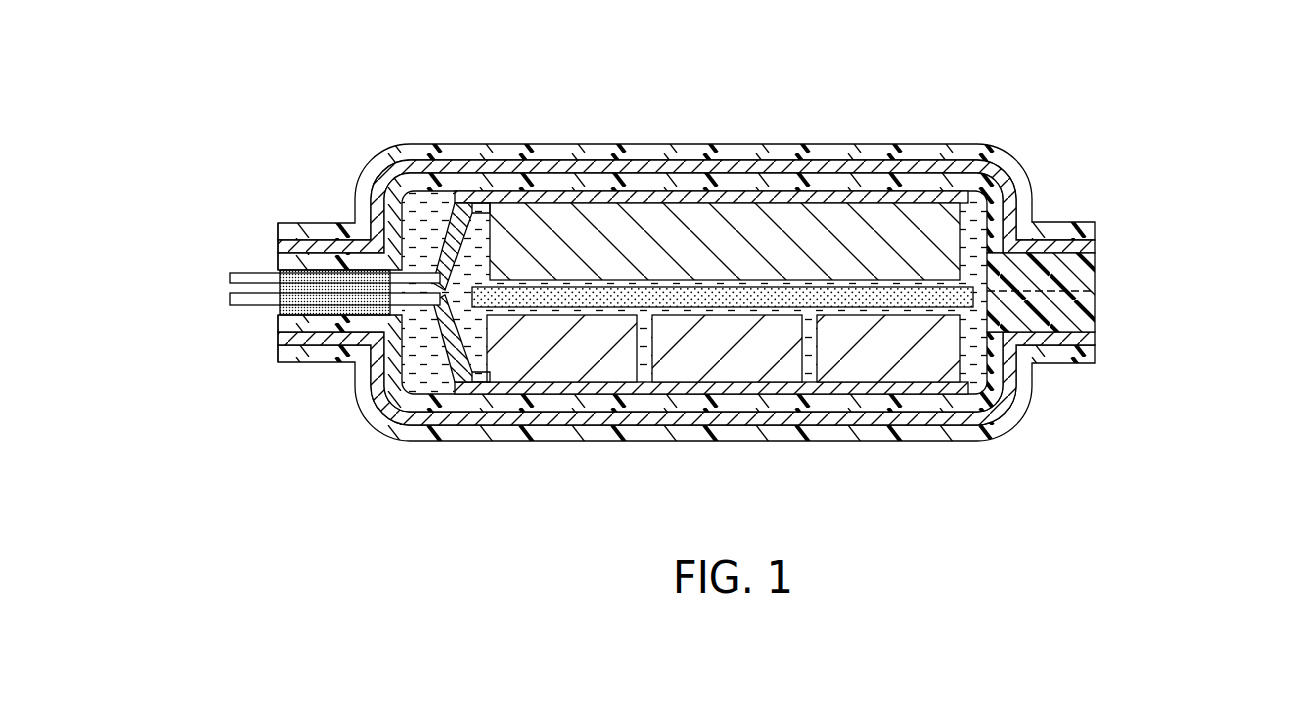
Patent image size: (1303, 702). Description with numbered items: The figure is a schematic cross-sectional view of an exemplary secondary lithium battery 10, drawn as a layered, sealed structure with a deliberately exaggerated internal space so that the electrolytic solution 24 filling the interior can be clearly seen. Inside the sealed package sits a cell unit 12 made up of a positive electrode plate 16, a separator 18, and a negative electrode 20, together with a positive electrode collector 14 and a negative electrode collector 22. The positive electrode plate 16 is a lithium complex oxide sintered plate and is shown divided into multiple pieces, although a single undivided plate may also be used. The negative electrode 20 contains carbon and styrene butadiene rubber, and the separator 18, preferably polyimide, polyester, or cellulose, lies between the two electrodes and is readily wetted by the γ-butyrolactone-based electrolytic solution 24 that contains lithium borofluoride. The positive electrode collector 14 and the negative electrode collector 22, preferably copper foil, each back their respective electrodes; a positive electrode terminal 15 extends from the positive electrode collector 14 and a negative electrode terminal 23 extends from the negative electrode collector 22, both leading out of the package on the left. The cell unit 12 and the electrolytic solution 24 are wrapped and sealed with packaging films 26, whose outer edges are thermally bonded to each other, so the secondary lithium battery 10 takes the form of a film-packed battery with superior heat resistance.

The secondary lithium battery 10 is at (993, 78).
The cell unit 12 is at (1217, 165).
The positive electrode collector 14 is at (1030, 387).
The positive electrode terminal 15 is at (232, 303).
The positive electrode plate 16 is at (947, 345).
The separator 18 is at (952, 292).
The negative electrode 20 is at (947, 233).
The negative electrode collector 22 is at (972, 180).
The negative electrode terminal 23 is at (232, 280).
The electrolytic solution 24 is at (422, 210).
The packaging films 26 is at (277, 222).